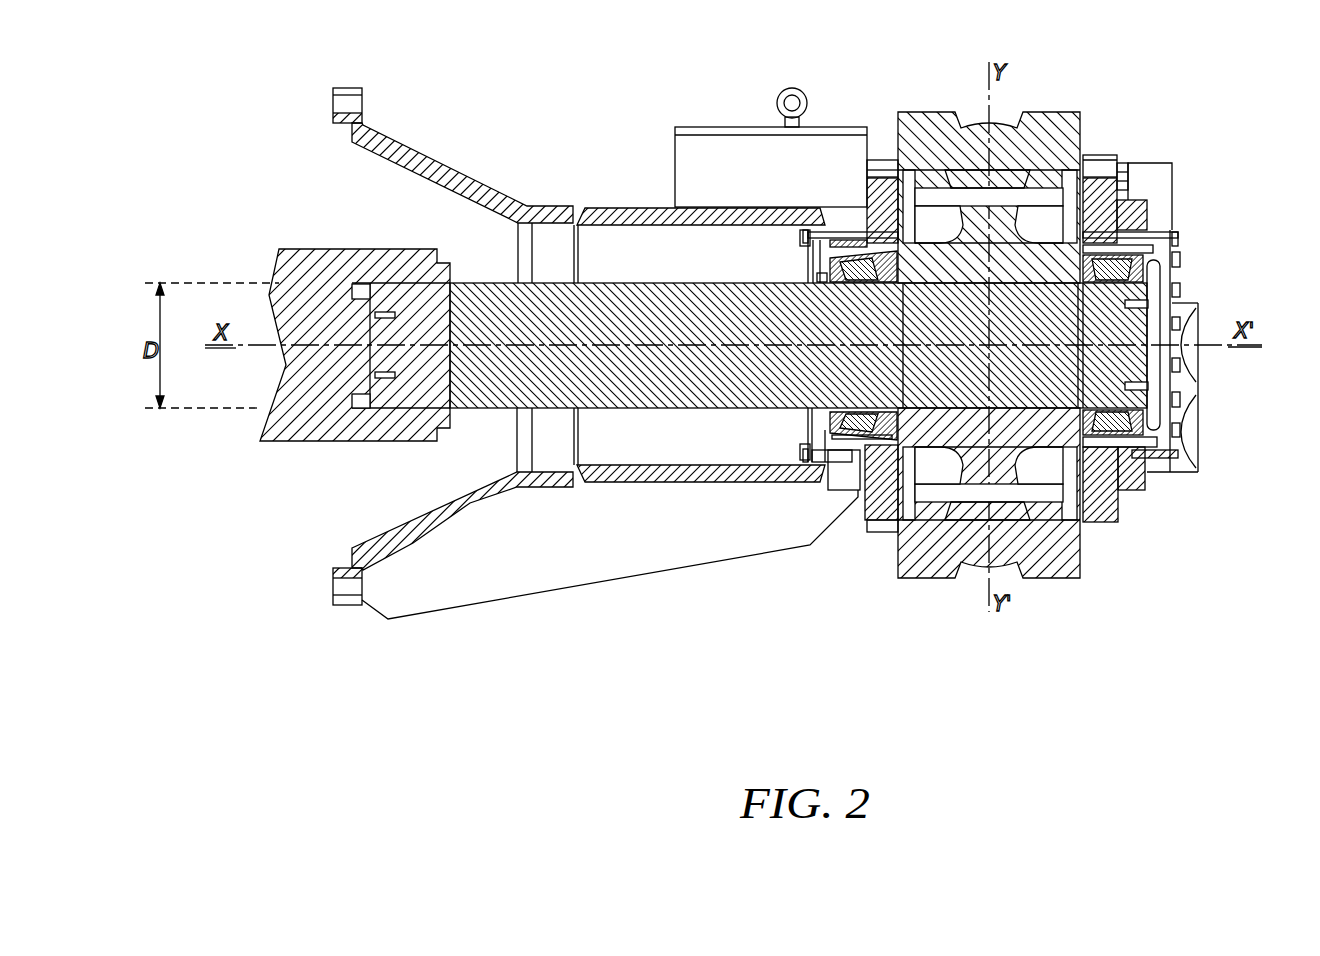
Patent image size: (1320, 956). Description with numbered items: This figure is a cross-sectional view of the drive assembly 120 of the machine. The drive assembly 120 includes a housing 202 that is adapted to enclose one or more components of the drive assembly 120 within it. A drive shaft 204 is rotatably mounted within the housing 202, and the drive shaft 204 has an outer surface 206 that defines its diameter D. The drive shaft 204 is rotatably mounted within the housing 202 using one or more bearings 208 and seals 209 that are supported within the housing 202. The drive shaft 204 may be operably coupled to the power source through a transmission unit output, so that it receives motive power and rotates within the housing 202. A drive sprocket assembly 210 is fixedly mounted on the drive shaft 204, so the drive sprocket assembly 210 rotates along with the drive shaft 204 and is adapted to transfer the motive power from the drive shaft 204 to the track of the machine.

The drive assembly 120 is at (676, 86).
The housing 202 is at (627, 207).
The drive shaft 204 is at (423, 365).
The outer surface 206 is at (641, 412).
The bearings 208 is at (845, 434).
The seals 209 is at (897, 243).
The drive sprocket assembly 210 is at (1070, 100).